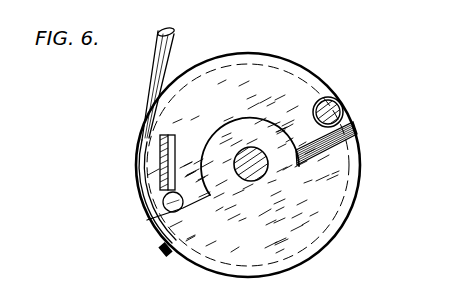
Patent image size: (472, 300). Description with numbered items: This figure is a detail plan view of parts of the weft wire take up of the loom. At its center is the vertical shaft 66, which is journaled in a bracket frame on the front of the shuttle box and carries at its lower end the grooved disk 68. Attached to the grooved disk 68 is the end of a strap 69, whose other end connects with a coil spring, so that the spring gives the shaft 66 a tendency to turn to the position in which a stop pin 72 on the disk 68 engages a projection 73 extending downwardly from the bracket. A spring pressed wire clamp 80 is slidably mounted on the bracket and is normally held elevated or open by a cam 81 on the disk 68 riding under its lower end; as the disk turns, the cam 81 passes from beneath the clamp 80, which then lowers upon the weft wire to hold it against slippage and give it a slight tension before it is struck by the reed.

The vertical shaft 66 is at (258, 180).
The grooved disk 68 is at (291, 75).
The strap 69 is at (177, 33).
The stop pin 72 is at (183, 208).
The projection 73 is at (172, 136).
The wire clamp 80 is at (344, 110).
The cam 81 is at (333, 146).